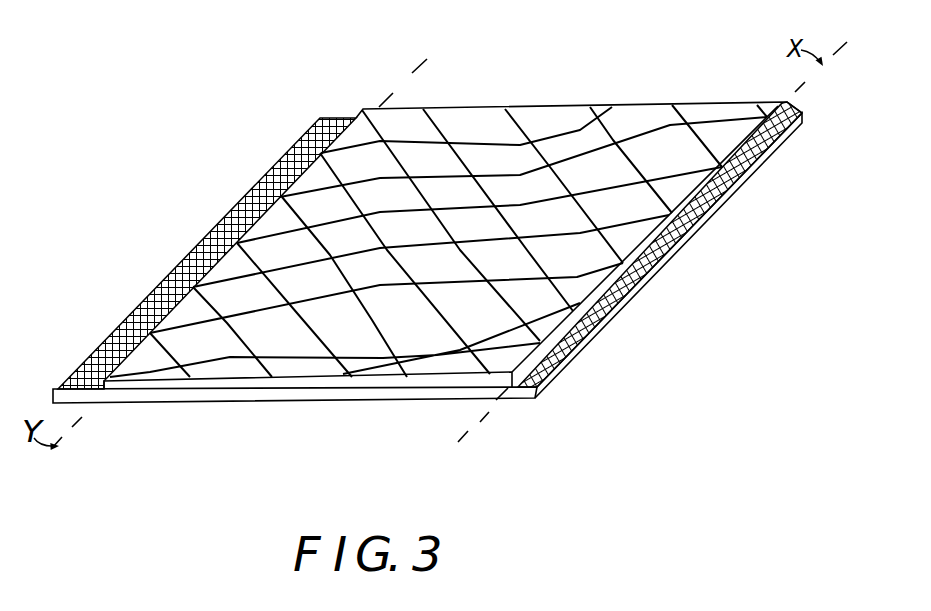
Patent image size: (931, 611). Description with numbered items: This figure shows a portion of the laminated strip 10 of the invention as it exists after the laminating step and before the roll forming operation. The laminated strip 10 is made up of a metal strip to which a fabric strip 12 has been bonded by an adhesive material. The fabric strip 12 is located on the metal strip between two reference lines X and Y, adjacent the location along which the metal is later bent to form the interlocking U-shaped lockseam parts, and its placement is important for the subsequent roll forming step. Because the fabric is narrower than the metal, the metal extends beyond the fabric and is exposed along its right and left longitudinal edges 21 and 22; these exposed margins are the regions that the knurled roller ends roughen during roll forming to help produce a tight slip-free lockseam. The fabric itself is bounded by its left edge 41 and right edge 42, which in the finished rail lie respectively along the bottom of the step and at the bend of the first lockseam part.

The laminated strip 10 is at (203, 211).
The fabric strip 12 is at (611, 140).
The right longitudinal edge 21 is at (666, 262).
The left longitudinal edge 22 is at (167, 290).
The left edge of the fabric 41 is at (93, 393).
The right edge of the fabric 42 is at (783, 102).